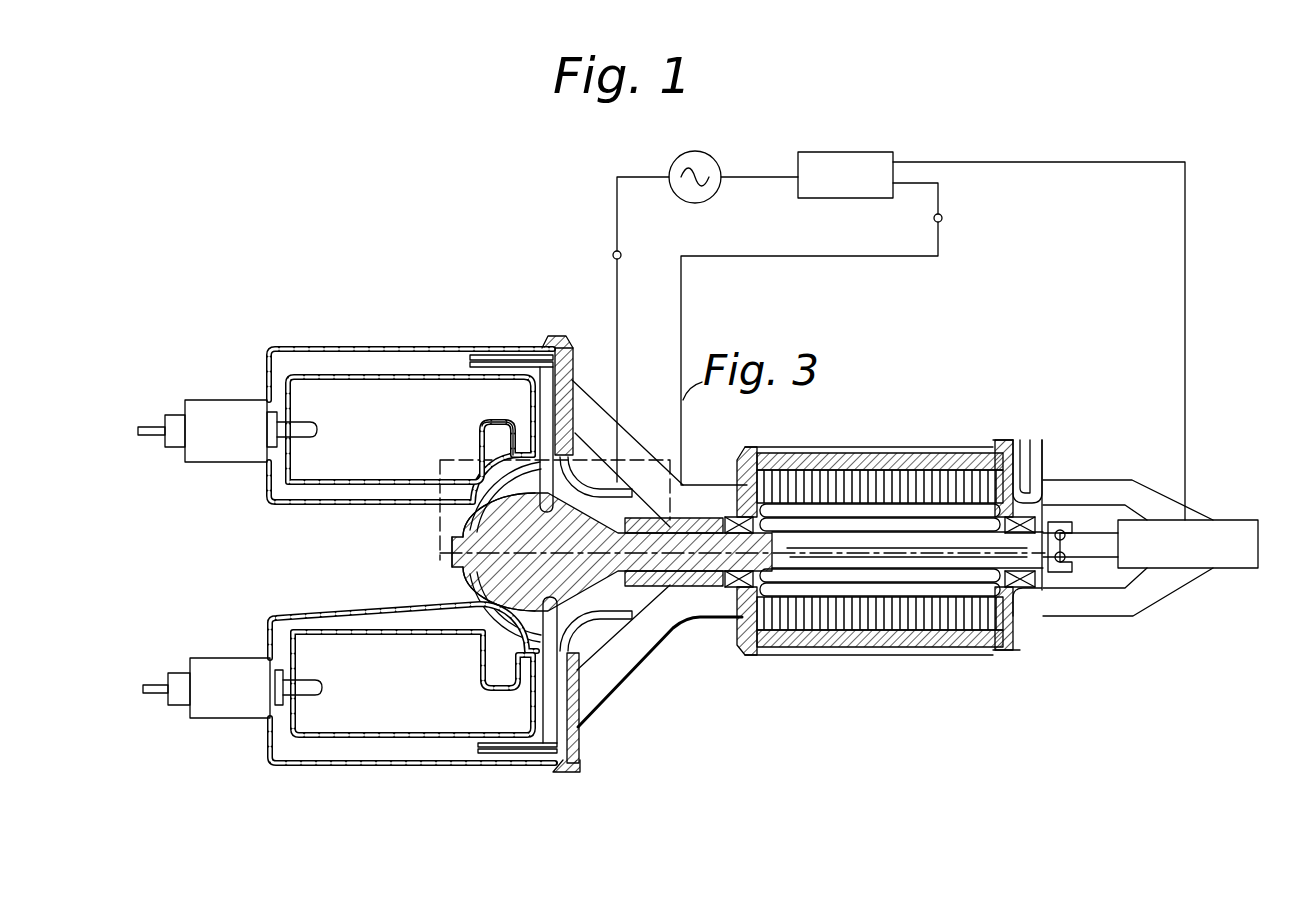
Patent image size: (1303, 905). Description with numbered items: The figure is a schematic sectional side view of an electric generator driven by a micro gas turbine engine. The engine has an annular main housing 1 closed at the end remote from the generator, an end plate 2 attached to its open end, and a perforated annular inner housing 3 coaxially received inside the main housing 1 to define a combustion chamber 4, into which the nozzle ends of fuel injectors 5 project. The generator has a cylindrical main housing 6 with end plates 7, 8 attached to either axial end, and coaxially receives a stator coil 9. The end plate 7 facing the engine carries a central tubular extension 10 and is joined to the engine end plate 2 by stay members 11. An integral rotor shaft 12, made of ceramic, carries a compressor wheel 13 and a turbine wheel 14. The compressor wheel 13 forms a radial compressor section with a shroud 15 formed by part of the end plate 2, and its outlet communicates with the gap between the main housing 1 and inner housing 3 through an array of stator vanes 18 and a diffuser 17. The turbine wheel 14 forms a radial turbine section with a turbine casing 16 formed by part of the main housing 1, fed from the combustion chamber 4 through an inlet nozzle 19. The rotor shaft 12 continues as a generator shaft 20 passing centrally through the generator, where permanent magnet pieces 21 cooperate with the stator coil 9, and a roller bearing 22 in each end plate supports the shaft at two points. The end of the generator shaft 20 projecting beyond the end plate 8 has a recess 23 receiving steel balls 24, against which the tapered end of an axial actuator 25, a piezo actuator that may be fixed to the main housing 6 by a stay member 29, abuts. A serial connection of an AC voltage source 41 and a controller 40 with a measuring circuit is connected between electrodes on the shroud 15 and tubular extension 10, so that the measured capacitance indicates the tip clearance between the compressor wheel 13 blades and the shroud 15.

The main housing 1 is at (286, 350).
The end plate 2 is at (563, 336).
The inner housing 3 is at (350, 375).
The combustion chamber 4 is at (411, 447).
The fuel injector 5 is at (205, 403).
The main housing 6 is at (883, 638).
The end plate 7 is at (740, 650).
The end plate 8 is at (1022, 634).
The stator coil 9 is at (817, 642).
The tubular extension 10 is at (648, 641).
The stay member 11 is at (645, 643).
The integral rotor shaft 12 is at (583, 545).
The compressor wheel 13 is at (580, 592).
The turbine wheel 14 is at (482, 592).
The shroud 15 is at (592, 498).
The turbine casing 16 is at (452, 556).
The diffuser 17 is at (583, 730).
The stator vanes 18 is at (503, 750).
The inlet nozzle 19 is at (520, 427).
The generator shaft 20 is at (947, 563).
The permanent magnet pieces 21 is at (882, 520).
The roller bearing 22 is at (735, 588).
The recess 23 is at (1068, 555).
The steel balls 24 is at (1057, 528).
The axial actuator 25 is at (1228, 568).
The stay member 29 is at (1128, 567).
The controller 40 is at (870, 152).
The AC voltage source 41 is at (712, 152).